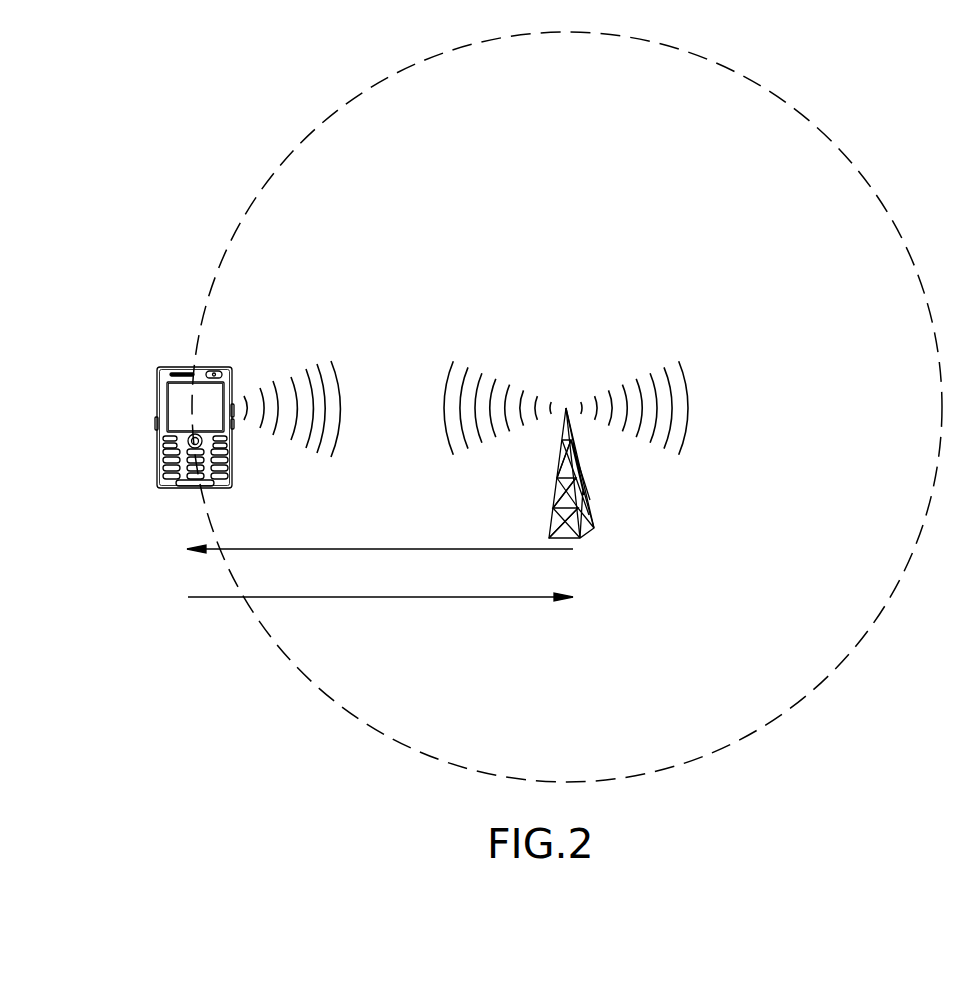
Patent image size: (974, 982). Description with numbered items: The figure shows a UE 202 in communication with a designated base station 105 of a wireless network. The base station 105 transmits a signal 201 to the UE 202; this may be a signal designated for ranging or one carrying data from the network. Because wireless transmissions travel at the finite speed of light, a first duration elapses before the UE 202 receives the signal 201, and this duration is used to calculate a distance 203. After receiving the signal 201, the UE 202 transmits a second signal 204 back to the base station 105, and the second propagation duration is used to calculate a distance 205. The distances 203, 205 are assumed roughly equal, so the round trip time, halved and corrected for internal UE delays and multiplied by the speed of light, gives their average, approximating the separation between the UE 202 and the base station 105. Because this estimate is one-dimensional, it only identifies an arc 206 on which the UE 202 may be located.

The base station 105 is at (583, 534).
The signal 201 is at (478, 375).
The UE 202 is at (173, 366).
The distance 203 is at (419, 549).
The second signal 204 is at (300, 448).
The distance 205 is at (463, 598).
The arc 206 is at (333, 110).